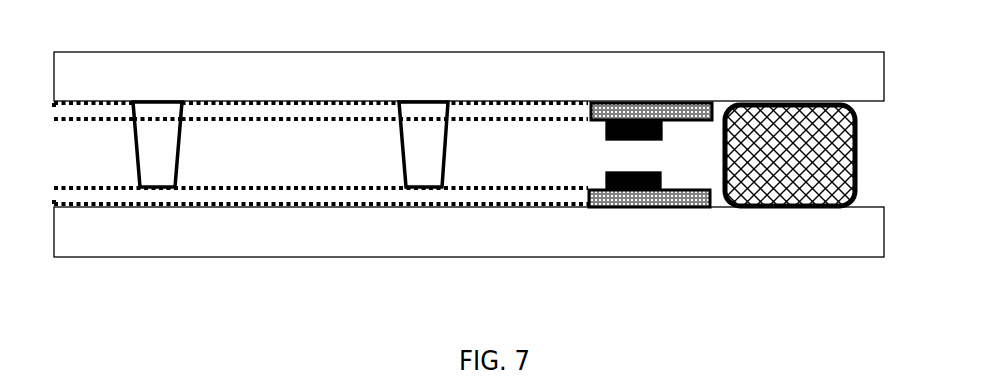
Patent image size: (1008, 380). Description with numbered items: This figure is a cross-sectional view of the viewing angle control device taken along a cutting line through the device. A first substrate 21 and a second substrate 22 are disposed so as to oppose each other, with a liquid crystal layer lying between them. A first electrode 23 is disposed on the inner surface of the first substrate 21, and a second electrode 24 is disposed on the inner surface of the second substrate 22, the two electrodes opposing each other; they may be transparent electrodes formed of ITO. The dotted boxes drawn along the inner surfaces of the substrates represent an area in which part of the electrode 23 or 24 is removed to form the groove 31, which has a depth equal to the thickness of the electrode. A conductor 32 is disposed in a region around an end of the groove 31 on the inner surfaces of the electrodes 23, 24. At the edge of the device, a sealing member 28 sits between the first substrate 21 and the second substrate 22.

The first substrate 21 is at (582, 72).
The second substrate 22 is at (588, 232).
The first electrode 23 is at (668, 110).
The second electrode 24 is at (670, 196).
The sealing member 28 is at (857, 155).
The groove 31 is at (330, 194).
The conductor 32 is at (605, 182).